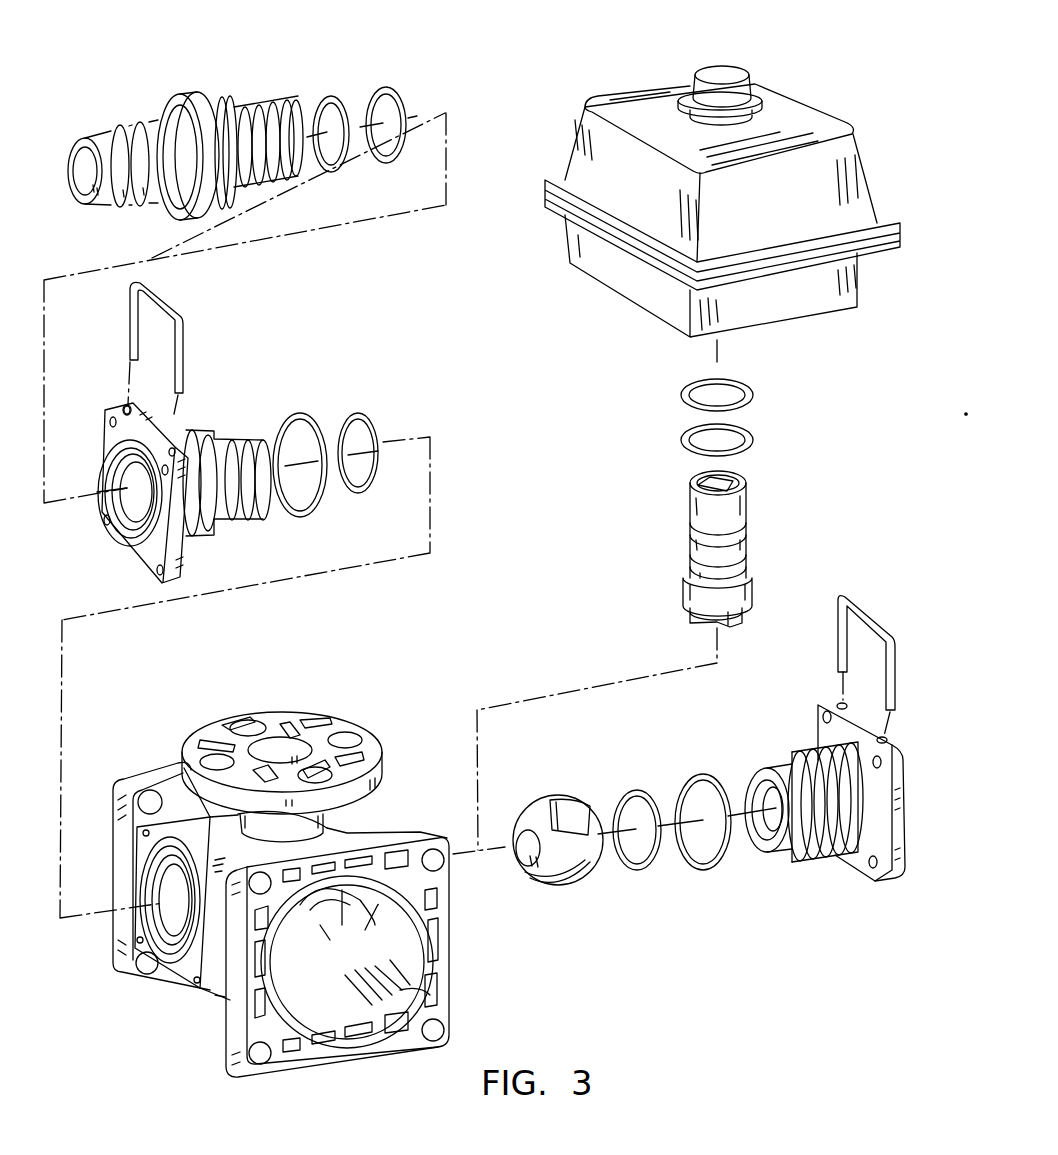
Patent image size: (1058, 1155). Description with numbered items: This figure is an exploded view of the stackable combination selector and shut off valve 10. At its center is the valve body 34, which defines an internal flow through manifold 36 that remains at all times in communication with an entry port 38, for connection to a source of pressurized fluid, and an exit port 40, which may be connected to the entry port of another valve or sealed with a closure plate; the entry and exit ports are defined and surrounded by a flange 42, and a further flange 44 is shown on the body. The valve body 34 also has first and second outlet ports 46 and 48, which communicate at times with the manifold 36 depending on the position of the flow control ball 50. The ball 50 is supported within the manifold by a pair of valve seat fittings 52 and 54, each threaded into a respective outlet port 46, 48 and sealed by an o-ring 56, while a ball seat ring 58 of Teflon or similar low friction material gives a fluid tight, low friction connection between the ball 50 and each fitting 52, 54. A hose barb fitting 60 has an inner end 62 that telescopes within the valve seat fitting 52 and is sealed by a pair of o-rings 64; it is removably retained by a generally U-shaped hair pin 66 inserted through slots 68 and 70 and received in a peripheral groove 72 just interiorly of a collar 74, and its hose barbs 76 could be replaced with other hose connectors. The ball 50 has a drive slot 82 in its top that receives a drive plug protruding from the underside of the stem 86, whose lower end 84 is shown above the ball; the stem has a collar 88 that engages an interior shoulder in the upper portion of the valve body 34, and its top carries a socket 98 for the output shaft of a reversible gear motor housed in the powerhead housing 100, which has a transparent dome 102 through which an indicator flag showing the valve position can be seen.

The stackable combination selector and shut off valve 10 is at (690, 952).
The valve body 34 is at (347, 830).
The internal flow through manifold 36 is at (353, 966).
The entry port 38 is at (182, 780).
The exit port 40 is at (413, 1007).
The flange 42 is at (157, 770).
The front mounting flange 44 is at (230, 1027).
The first outlet port 46 is at (173, 955).
The second outlet port 48 is at (368, 833).
The flow control ball 50 is at (575, 870).
The valve seat fitting 52 is at (183, 433).
The valve seat fitting 54 is at (825, 848).
The o-ring 56 is at (295, 413).
The ball seat ring 58 is at (360, 413).
The hose barb fitting 60 is at (191, 70).
The inner end 62 is at (265, 100).
The o-ring 64 is at (332, 98).
The U-shaped hair pin 66 is at (180, 340).
The slot 68 is at (140, 403).
The slot 70 is at (175, 450).
The peripheral groove 72 is at (216, 108).
The collar 74 is at (212, 213).
The hose barbs 76 is at (128, 135).
The drive slot 82 is at (570, 822).
The stem end 84 is at (725, 628).
The stem 86 is at (750, 535).
The collar 88 is at (747, 598).
The socket 98 is at (737, 487).
The powerhead housing 100 is at (863, 175).
The transparent dome 102 is at (733, 72).